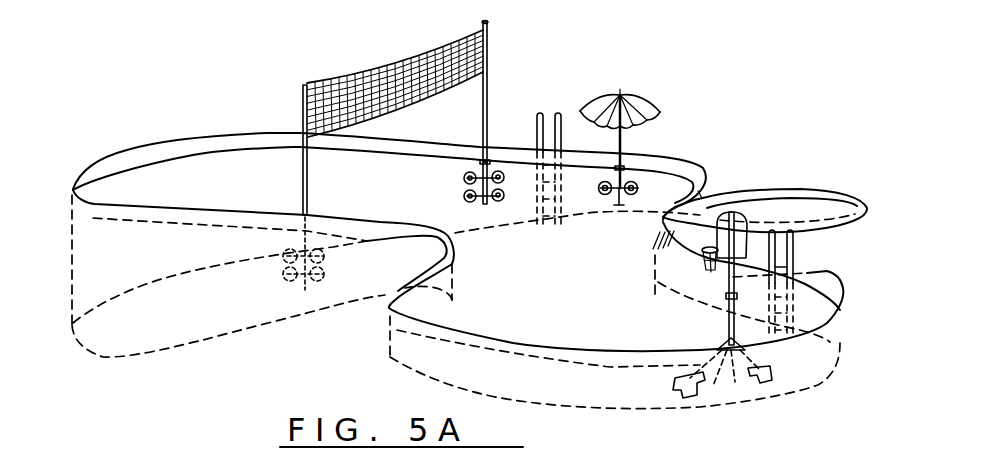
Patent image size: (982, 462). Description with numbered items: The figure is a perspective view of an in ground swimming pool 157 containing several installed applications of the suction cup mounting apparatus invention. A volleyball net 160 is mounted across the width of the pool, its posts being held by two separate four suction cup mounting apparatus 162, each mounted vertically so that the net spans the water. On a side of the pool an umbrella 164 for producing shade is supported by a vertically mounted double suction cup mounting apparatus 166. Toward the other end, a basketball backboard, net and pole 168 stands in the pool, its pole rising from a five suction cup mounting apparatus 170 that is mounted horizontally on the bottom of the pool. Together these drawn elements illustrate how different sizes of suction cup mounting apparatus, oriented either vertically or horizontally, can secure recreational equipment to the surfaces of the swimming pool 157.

The in ground swimming pool 157 is at (173, 143).
The volleyball net 160 is at (487, 32).
The four suction cup mounting apparatus 162 is at (487, 160).
The umbrella 164 is at (627, 138).
The double suction cup mounting apparatus 166 is at (637, 185).
The basketball backboard, net and pole 168 is at (740, 215).
The five suction cup mounting apparatus 170 is at (722, 336).